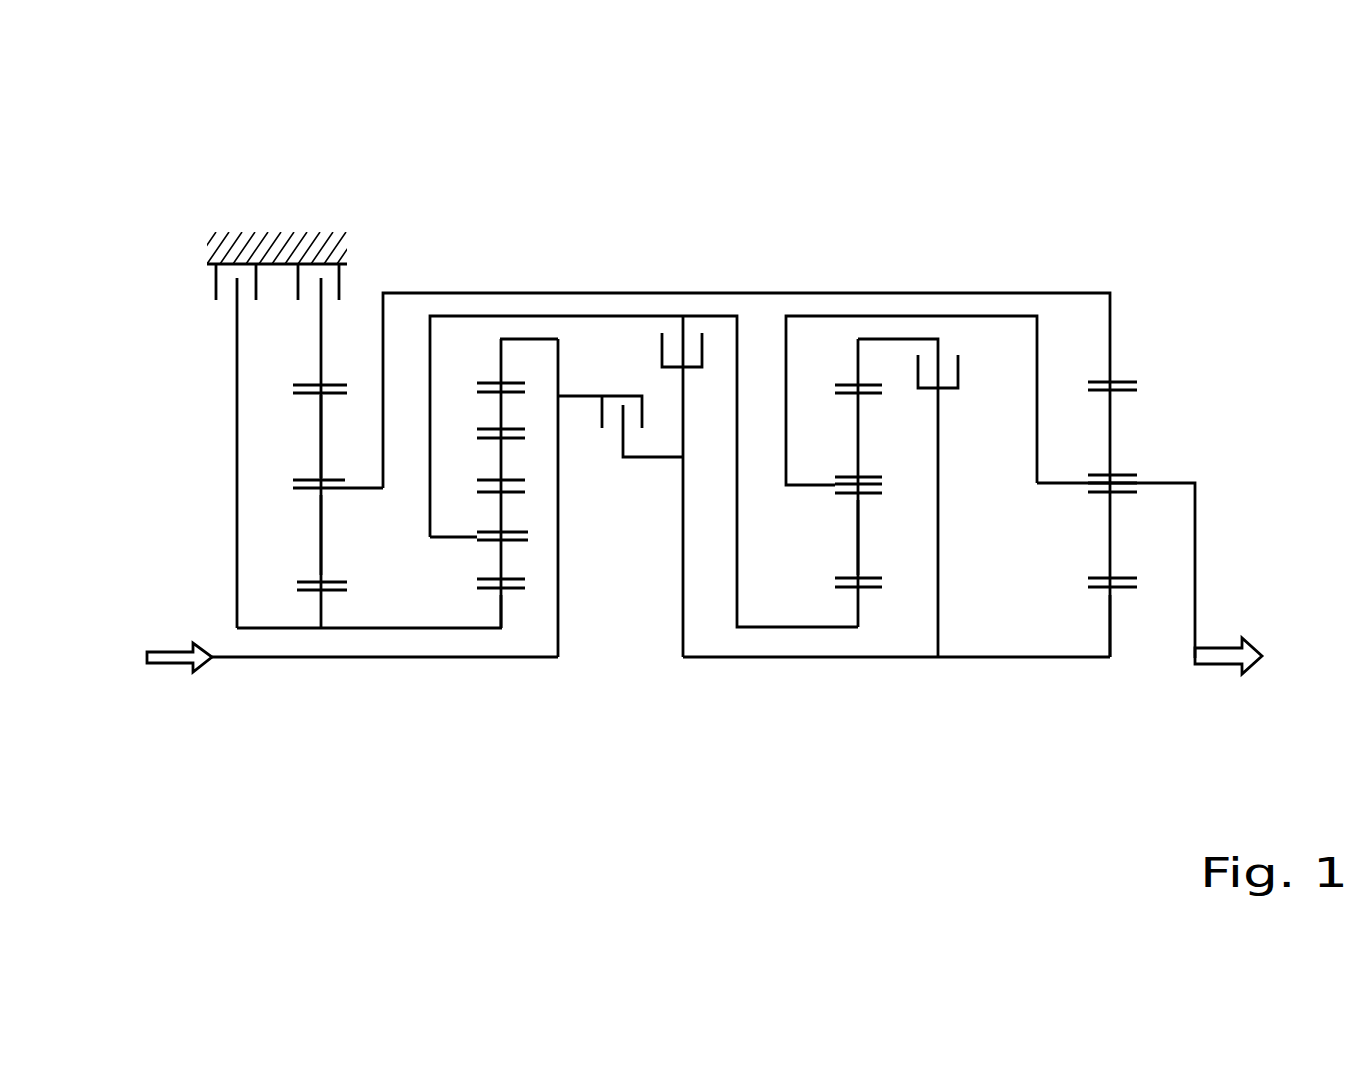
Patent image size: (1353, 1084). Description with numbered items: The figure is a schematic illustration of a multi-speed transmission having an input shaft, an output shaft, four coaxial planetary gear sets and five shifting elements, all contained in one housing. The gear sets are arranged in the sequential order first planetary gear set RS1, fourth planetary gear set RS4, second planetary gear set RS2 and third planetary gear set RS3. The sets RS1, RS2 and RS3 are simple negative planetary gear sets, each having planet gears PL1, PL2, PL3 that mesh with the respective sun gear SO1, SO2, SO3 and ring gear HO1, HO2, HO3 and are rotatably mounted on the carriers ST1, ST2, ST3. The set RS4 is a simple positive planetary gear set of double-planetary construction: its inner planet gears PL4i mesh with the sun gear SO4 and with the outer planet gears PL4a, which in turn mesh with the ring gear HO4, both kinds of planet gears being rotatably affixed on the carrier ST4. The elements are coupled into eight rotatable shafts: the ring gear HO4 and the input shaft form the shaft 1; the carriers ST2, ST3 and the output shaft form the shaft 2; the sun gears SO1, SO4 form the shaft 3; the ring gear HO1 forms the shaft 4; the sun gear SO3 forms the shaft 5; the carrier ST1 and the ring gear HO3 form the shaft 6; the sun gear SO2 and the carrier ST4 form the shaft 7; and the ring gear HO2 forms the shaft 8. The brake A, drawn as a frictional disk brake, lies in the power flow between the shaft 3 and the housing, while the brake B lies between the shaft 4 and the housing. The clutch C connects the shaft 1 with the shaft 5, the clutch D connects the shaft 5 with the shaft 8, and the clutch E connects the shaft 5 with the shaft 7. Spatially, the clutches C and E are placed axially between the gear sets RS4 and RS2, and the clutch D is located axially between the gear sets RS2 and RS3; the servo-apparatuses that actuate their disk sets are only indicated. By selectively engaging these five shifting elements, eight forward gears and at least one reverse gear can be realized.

The brake A is at (208, 312).
The brake B is at (300, 314).
The clutch C is at (644, 376).
The clutch D is at (962, 407).
The clutch E is at (708, 337).
The shaft 1 is at (560, 500).
The shaft 2 is at (1017, 316).
The shaft 3 is at (343, 628).
The shaft 4 is at (321, 360).
The shaft 5 is at (962, 657).
The shaft 6 is at (810, 293).
The shaft 7 is at (573, 316).
The shaft 8 is at (937, 340).
The first planetary gear set RS1 is at (323, 607).
The second planetary gear set RS2 is at (885, 503).
The third planetary gear set RS3 is at (1132, 512).
The fourth planetary gear set RS4 is at (470, 545).
The sun gear SO1 is at (303, 512).
The sun gear SO2 is at (858, 608).
The sun gear SO3 is at (1112, 626).
The sun gear SO4 is at (502, 607).
The ring gear HO1 is at (321, 348).
The ring gear HO2 is at (857, 363).
The ring gear HO3 is at (1110, 344).
The ring gear HO4 is at (500, 341).
The carrier ST1 is at (293, 491).
The carrier ST2 is at (803, 487).
The carrier ST3 is at (1163, 482).
The carrier ST4 is at (452, 433).
The planet gears PL1 is at (321, 435).
The planet gears PL2 is at (857, 437).
The planet gears PL3 is at (1110, 433).
The outer planet gears PL4a is at (478, 427).
The inner planet gears PL4i is at (503, 560).